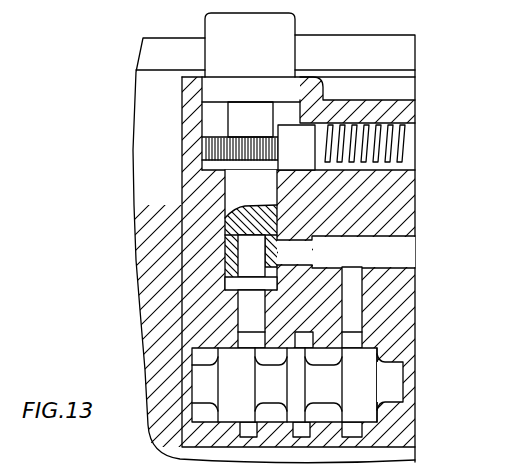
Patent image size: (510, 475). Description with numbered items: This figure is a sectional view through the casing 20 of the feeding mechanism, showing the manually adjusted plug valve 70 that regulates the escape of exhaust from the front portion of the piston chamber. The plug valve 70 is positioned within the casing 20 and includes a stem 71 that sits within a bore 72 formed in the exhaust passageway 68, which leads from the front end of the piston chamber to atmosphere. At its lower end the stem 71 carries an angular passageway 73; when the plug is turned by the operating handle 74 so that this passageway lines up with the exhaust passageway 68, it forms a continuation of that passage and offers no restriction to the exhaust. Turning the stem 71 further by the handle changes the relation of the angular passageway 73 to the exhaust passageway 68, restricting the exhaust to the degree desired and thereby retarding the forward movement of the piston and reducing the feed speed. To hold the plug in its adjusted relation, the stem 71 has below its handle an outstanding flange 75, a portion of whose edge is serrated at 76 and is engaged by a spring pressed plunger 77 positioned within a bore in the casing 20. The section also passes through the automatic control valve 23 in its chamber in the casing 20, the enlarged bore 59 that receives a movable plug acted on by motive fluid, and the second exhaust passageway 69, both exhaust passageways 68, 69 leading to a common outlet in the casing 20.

The casing 20 is at (255, 235).
The automatic valve 23 is at (358, 370).
The enlarged bore 59 is at (395, 410).
The exhaust passageway 68 is at (243, 310).
The exhaust passageway 69 is at (357, 296).
The plug valve 70 is at (240, 112).
The stem 71 is at (245, 195).
The bore 72 is at (225, 228).
The angular passageway 73 is at (253, 258).
The operating handle 74 is at (220, 47).
The outstanding flange 75 is at (205, 148).
The serrated portion 76 is at (233, 148).
The spring pressed plunger 77 is at (323, 143).